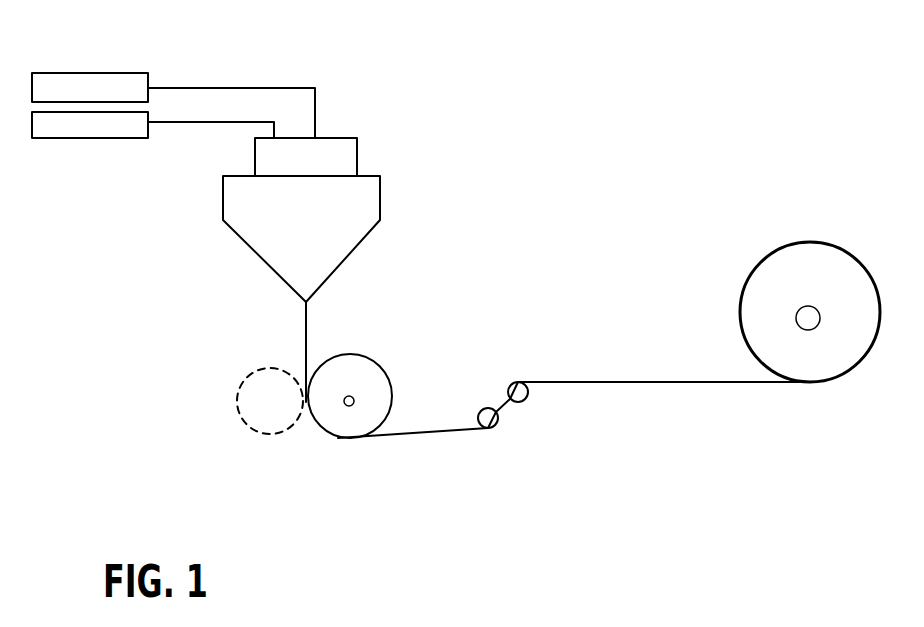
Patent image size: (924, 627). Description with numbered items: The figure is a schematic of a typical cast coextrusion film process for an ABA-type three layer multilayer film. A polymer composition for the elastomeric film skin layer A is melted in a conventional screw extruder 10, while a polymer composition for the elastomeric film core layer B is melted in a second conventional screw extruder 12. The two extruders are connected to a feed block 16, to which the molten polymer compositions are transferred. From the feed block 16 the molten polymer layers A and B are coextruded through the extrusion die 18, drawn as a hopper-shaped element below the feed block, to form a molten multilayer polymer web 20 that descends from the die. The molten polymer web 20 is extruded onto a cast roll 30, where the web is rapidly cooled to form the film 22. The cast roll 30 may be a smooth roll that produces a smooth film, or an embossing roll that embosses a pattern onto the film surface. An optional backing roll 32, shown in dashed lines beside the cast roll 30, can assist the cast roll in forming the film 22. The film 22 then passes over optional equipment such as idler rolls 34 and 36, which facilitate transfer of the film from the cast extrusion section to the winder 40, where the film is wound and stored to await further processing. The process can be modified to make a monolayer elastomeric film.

The screw extruder 10 is at (99, 84).
The screw extruder 12 is at (94, 132).
The feed block 16 is at (336, 148).
The extrusion die 18 is at (326, 242).
The molten multilayer polymer web 20 is at (293, 333).
The film 22 is at (422, 445).
The cast roll 30 is at (368, 370).
The backing roll 32 is at (254, 406).
The idler roll 34 is at (478, 397).
The idler roll 36 is at (536, 410).
The winder 40 is at (785, 275).